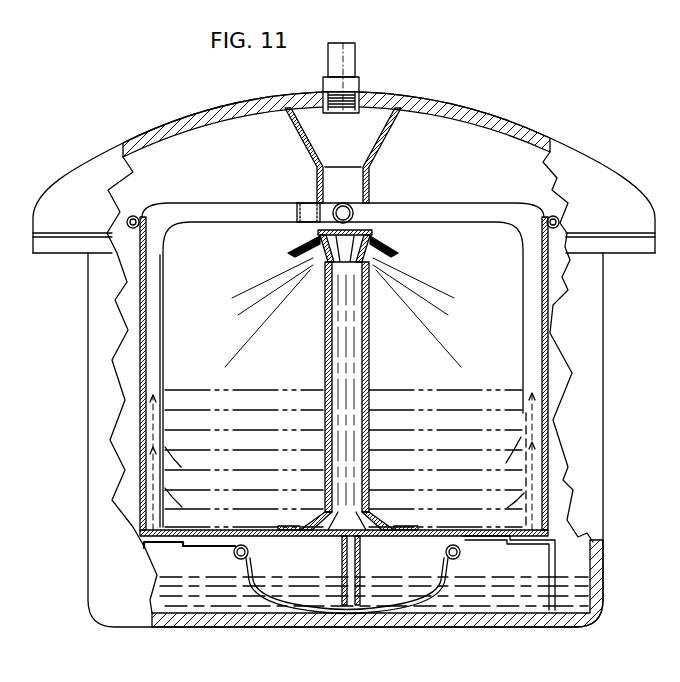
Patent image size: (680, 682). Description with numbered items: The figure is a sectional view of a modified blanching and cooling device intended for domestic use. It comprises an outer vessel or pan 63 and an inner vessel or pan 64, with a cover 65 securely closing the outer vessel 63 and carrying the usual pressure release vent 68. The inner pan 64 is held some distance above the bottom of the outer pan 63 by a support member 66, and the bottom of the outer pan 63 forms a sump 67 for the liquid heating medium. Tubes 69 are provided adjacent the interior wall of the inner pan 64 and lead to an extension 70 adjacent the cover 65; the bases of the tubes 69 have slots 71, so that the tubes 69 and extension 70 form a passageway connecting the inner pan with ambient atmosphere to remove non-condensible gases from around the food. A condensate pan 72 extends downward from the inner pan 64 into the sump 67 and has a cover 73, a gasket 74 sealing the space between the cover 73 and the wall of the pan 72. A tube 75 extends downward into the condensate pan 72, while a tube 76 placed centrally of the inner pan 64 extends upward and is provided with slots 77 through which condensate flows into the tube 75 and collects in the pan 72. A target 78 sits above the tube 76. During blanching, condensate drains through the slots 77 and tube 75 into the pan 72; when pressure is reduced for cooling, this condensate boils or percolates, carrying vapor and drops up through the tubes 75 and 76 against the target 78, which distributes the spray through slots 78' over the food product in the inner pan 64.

The outer vessel 63 is at (597, 515).
The inner vessel 64 is at (547, 303).
The cover 65 is at (590, 160).
The support member 66 is at (554, 587).
The sump 67 is at (473, 620).
The pressure release vent 68 is at (345, 64).
The tubes 69 is at (166, 300).
The extension 70 is at (374, 153).
The slots 71 is at (157, 521).
The condensate pan 72 is at (420, 595).
The cover 73 is at (438, 537).
The gasket 74 is at (461, 560).
The tube 75 is at (343, 580).
The tube 76 is at (326, 352).
The slots 77 is at (318, 532).
The target 78 is at (343, 298).
The slots 78' is at (282, 246).